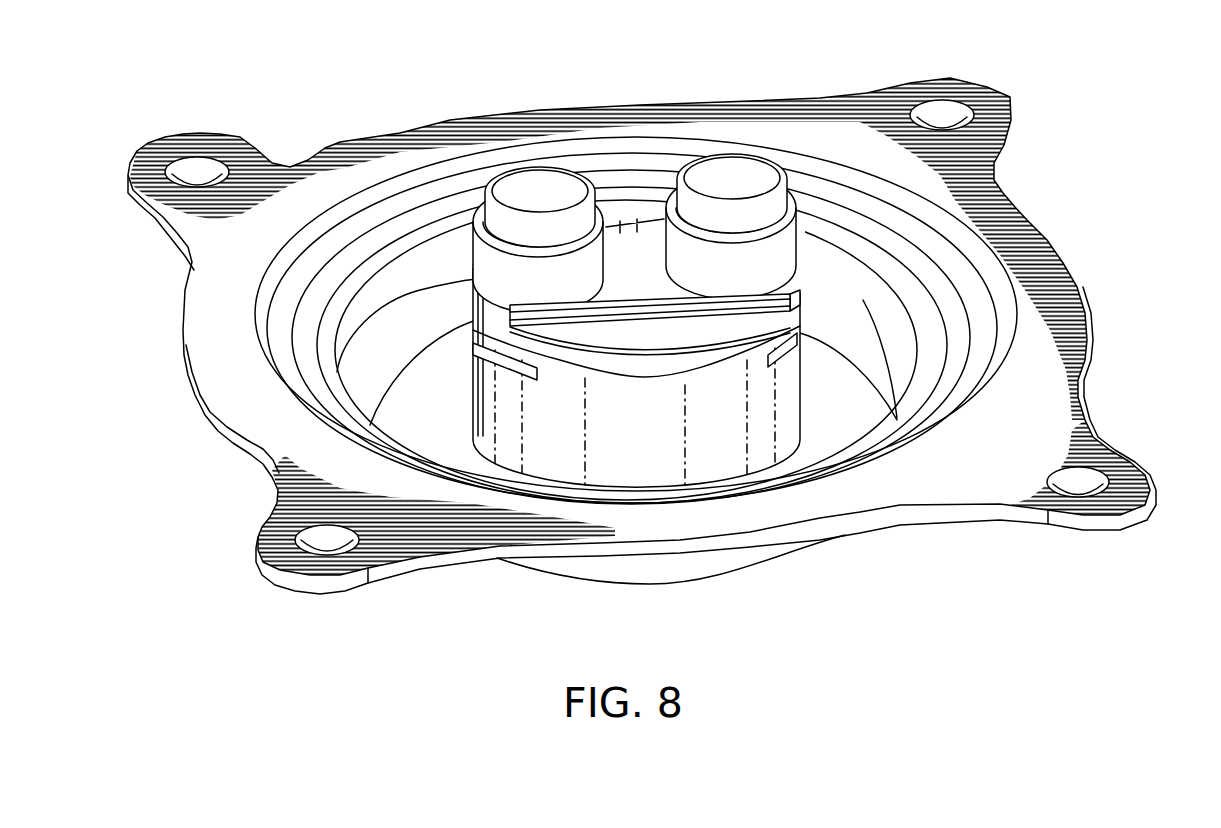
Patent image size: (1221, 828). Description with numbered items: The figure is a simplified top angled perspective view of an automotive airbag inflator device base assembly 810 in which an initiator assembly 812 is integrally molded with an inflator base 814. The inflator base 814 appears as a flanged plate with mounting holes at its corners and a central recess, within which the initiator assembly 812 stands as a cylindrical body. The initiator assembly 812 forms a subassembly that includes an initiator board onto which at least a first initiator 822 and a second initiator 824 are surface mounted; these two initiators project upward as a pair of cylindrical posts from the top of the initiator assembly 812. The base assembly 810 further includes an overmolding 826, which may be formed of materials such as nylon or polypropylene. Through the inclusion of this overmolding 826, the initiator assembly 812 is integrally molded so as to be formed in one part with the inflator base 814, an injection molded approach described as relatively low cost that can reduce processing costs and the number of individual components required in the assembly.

The automotive airbag inflator device base assembly 810 is at (1057, 223).
The initiator assembly 812 is at (645, 458).
The inflator base 814 is at (952, 478).
The first initiator 822 is at (532, 190).
The second initiator 824 is at (728, 173).
The overmolding 826 is at (497, 397).